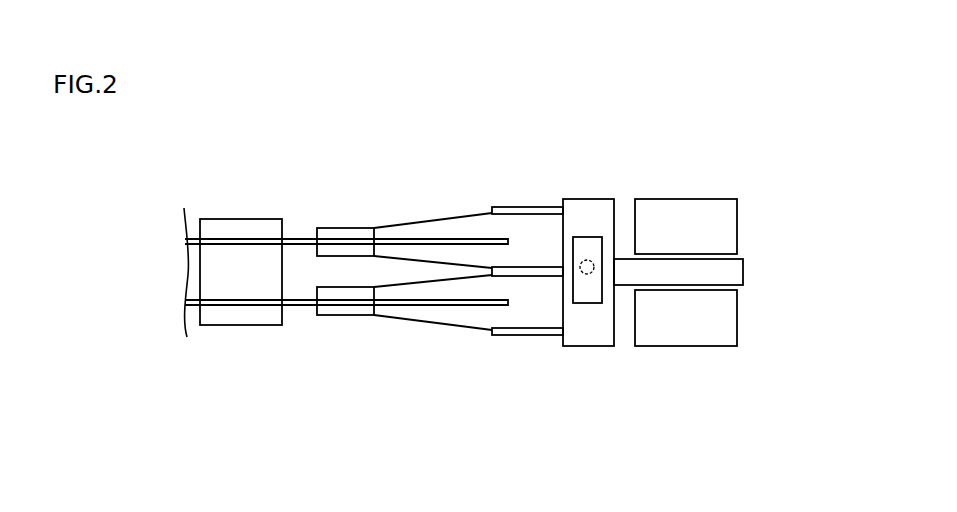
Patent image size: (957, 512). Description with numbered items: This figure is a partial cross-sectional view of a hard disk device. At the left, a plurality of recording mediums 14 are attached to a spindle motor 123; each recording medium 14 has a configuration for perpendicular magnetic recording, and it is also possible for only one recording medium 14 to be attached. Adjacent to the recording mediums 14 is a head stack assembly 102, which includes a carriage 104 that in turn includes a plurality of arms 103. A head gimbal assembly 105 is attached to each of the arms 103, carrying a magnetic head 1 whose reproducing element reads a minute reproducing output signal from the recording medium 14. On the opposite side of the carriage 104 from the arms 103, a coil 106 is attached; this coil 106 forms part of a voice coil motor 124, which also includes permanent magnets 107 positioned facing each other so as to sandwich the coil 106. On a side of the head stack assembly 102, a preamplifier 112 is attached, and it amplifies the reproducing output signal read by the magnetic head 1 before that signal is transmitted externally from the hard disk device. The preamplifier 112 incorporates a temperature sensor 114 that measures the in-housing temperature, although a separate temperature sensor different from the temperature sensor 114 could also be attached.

The magnetic head 1 is at (316, 228).
The recording medium 14 is at (292, 237).
The head stack assembly 102 is at (614, 147).
The arms 103 is at (505, 207).
The carriage 104 is at (592, 340).
The head gimbal assembly 105 is at (427, 222).
The coil 106 is at (733, 273).
The permanent magnets 107 is at (681, 199).
The preamplifier 112 is at (581, 247).
The temperature sensor 114 is at (580, 272).
The spindle motor 123 is at (222, 222).
The voice coil motor 124 is at (769, 162).